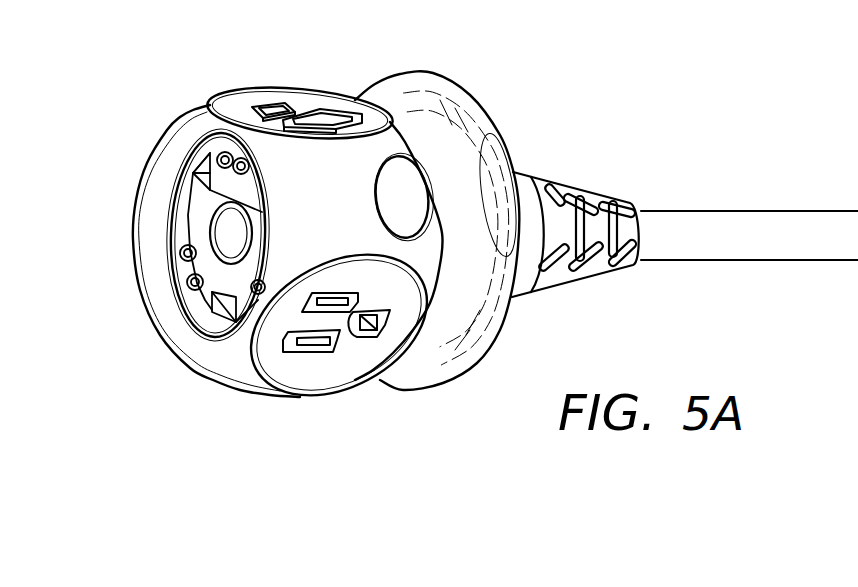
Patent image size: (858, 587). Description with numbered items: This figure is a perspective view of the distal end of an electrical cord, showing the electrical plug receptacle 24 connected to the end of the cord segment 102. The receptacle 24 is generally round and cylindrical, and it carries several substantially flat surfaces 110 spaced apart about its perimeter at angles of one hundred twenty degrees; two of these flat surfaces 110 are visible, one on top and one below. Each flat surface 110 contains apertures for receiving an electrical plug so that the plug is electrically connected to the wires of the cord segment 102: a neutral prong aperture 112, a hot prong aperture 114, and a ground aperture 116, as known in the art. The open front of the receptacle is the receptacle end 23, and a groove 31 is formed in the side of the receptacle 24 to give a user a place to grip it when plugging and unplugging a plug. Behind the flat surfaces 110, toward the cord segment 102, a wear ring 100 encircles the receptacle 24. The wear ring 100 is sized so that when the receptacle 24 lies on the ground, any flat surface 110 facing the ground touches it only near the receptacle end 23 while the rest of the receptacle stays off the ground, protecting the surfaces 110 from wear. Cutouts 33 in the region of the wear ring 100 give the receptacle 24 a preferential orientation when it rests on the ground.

The receptacle end 23 is at (132, 204).
The electrical plug receptacle 24 is at (308, 173).
The grooves 31 is at (410, 190).
The cutouts 33 is at (503, 217).
The wear ring 100 is at (443, 90).
The cord segment 102 is at (762, 211).
The substantially flat surface 110 is at (248, 98).
The neutral prong aperture 112 is at (312, 345).
The hot prong aperture 114 is at (302, 312).
The ground aperture 116 is at (358, 334).